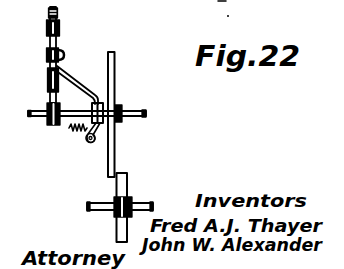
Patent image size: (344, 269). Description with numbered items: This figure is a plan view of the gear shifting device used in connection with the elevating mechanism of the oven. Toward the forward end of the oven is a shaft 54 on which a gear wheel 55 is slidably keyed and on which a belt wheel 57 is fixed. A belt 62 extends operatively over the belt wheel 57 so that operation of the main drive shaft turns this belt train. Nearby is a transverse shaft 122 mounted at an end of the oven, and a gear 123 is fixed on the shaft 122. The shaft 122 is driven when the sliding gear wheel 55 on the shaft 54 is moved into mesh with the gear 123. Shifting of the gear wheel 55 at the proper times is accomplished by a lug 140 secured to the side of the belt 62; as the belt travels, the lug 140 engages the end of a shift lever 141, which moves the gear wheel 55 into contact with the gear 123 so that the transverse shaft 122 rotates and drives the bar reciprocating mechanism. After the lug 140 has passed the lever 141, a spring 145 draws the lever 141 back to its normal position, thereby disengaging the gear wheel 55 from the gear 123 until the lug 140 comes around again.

The shaft 54 is at (143, 112).
The gear wheel 55 is at (114, 77).
The belt wheel 57 is at (55, 127).
The belt 62 is at (48, 80).
The transverse shaft 122 is at (150, 205).
The gear 123 is at (127, 184).
The lug 140 is at (61, 54).
The shift lever 141 is at (76, 74).
The spring 145 is at (80, 133).